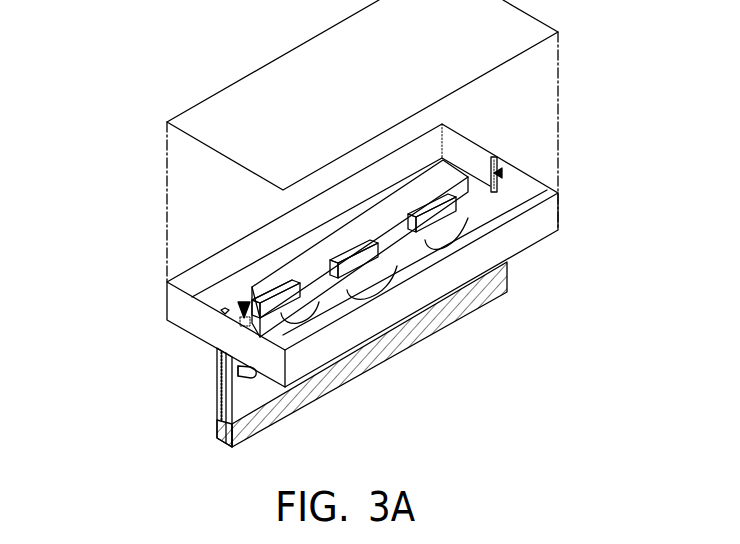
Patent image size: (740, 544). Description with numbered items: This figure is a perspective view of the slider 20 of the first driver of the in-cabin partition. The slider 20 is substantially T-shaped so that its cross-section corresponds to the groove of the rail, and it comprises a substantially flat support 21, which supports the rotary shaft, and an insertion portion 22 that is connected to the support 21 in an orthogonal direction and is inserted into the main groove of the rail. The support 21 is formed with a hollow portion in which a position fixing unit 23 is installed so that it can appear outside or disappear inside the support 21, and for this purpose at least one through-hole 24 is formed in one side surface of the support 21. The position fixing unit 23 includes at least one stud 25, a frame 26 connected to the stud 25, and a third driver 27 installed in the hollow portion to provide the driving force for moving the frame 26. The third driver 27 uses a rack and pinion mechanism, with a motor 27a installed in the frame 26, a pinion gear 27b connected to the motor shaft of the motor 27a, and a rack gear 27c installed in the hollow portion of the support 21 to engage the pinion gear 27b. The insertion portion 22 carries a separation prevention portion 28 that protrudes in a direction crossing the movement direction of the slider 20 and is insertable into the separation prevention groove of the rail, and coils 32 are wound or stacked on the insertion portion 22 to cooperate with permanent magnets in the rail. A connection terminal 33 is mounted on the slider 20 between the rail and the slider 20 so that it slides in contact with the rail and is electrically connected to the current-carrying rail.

The slider 20 is at (161, 31).
The support 21 is at (552, 213).
The insertion portion 22 is at (244, 402).
The position fixing unit 23 is at (100, 188).
The through-hole 24 is at (492, 206).
The stud 25 is at (255, 300).
The frame 26 is at (266, 296).
The third driver 27 is at (241, 302).
The motor 27a is at (488, 165).
The pinion gear 27b is at (499, 182).
The rack gear 27c is at (497, 170).
The separation prevention portion 28 is at (249, 380).
The coils 32 is at (222, 382).
The connection terminal 33 is at (509, 280).